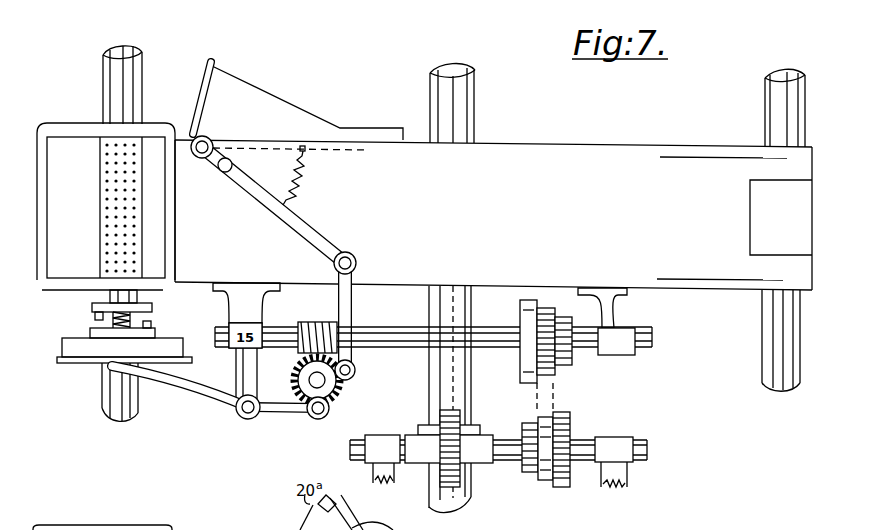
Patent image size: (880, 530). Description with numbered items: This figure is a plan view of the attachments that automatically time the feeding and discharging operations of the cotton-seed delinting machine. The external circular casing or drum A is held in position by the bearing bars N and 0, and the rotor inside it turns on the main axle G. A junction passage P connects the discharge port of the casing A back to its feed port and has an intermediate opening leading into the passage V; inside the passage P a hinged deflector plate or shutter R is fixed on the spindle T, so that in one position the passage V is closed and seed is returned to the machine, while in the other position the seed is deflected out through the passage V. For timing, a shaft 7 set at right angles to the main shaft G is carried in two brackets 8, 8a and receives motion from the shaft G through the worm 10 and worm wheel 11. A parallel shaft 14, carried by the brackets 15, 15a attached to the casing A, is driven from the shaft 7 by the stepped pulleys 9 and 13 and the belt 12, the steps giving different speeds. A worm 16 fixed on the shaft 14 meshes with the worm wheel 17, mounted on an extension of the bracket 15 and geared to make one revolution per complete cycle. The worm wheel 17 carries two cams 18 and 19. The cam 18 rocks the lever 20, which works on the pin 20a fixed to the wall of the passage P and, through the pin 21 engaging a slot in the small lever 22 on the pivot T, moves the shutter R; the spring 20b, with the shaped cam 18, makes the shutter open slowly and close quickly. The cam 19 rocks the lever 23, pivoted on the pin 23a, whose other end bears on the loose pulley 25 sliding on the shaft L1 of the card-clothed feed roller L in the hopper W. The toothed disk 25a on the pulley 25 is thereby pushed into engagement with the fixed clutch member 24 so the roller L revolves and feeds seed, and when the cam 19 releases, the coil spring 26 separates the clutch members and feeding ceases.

The shaft 7 is at (505, 445).
The bracket 8 is at (382, 459).
The bracket 8a is at (614, 462).
The stepped pulley 9 is at (568, 425).
The worm 10 is at (487, 461).
The worm wheel 11 is at (460, 477).
The belt 12 is at (550, 397).
The stepped pulley 13 is at (522, 365).
The shaft 14 is at (493, 328).
The bracket 15 is at (246, 343).
The bracket 15a is at (264, 360).
The worm 16 is at (313, 323).
The worm wheel 17 is at (292, 364).
The cam 18 is at (352, 382).
The cam 19 is at (331, 403).
The rocking lever 20 is at (352, 303).
The pin 20a is at (357, 263).
The spring 20b is at (298, 176).
The pin 21 is at (233, 164).
The small lever 22 is at (207, 160).
The lever 23 is at (287, 412).
The pin 23a is at (248, 420).
The fixed clutch member 24 is at (110, 296).
The loose pulley 25 is at (68, 346).
The toothed disk 25a is at (155, 336).
The coil spring 26 is at (112, 320).
The external circular casing A is at (493, 215).
The axle G is at (452, 288).
The bearing bar N is at (783, 230).
The bearing bar 0 is at (122, 85).
The feed roller L is at (117, 148).
The shaft L1 is at (112, 368).
The hopper W is at (106, 201).
The passage V is at (298, 101).
The deflector plate R is at (337, 145).
The spindle T is at (195, 160).
The passage P is at (339, 217).